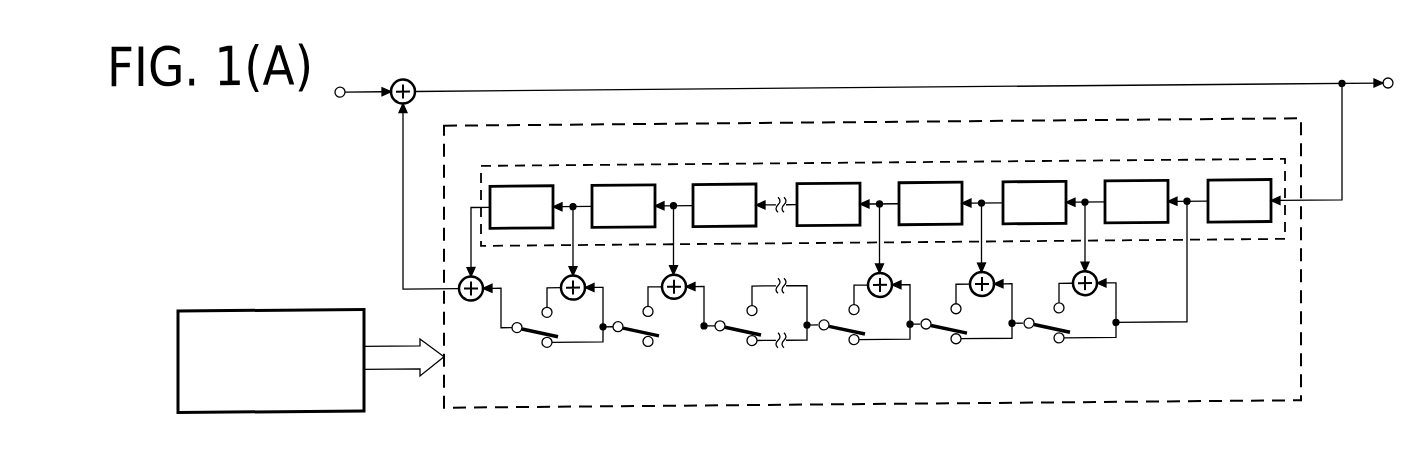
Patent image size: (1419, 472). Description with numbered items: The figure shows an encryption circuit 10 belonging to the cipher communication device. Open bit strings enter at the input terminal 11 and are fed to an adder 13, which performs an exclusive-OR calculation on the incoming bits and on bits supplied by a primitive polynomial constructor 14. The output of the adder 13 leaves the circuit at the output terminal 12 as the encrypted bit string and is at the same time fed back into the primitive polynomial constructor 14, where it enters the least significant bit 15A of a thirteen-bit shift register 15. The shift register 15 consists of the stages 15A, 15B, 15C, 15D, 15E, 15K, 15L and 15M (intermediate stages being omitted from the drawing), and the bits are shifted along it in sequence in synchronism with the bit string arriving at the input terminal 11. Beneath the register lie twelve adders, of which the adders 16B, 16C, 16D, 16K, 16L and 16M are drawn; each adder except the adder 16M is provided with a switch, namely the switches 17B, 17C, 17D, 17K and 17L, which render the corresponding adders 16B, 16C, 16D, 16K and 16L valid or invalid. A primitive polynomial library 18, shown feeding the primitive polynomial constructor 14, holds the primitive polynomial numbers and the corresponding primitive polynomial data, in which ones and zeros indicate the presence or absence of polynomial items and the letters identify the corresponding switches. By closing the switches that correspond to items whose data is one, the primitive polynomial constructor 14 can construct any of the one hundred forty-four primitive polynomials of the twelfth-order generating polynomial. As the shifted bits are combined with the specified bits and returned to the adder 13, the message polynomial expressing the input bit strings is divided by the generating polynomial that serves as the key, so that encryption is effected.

The encryption circuit 10 is at (253, 243).
The input terminal 11 is at (341, 97).
The output terminal 12 is at (1389, 97).
The adder 13 is at (413, 83).
The primitive polynomial constructor 14 is at (1303, 347).
The shift register 15 is at (1244, 246).
The least significant bit of shift register 15A is at (1239, 201).
The shift register bit 15B is at (1136, 201).
The shift register bit 15C is at (1034, 202).
The shift register bit 15D is at (930, 203).
The shift register bit 15E is at (828, 204).
The shift register bit 15K is at (724, 205).
The shift register bit 15L is at (623, 206).
The shift register bit 15M is at (521, 207).
The adder 16B is at (1097, 272).
The adder 16C is at (994, 272).
The adder 16D is at (892, 272).
The adder 16K is at (686, 272).
The adder 16L is at (585, 272).
The adder 16M is at (483, 272).
The switch 17B is at (1041, 338).
The switch 17C is at (938, 338).
The switch 17D is at (836, 338).
The switch 17K is at (633, 338).
The switch 17L is at (531, 338).
The primitive polynomial library 18 is at (323, 308).